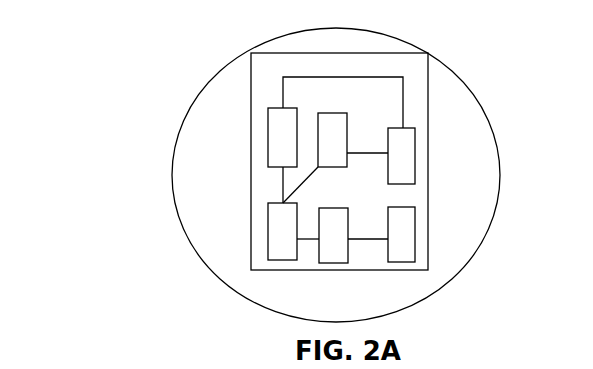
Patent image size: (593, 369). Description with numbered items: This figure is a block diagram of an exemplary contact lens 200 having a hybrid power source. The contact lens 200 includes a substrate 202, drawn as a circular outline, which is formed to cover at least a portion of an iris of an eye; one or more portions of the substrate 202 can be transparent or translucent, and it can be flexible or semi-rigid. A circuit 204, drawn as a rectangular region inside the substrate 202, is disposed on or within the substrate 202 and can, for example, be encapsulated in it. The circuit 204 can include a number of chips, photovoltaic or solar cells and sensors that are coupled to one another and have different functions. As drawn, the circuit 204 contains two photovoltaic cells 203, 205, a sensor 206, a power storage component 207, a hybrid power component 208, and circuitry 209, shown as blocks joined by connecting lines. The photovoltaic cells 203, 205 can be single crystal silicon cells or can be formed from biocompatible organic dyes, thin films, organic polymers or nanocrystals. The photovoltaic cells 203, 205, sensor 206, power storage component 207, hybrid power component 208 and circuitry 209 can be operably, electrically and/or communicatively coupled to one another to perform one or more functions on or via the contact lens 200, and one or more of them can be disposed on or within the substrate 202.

The contact lens 200 is at (122, 62).
The substrate 202 is at (463, 82).
The photovoltaic cell 203 is at (268, 108).
The circuit 204 is at (252, 220).
The photovoltaic cell 205 is at (317, 137).
The sensor 206 is at (408, 263).
The power storage component 207 is at (415, 172).
The hybrid power component 208 is at (288, 255).
The circuitry 209 is at (327, 263).